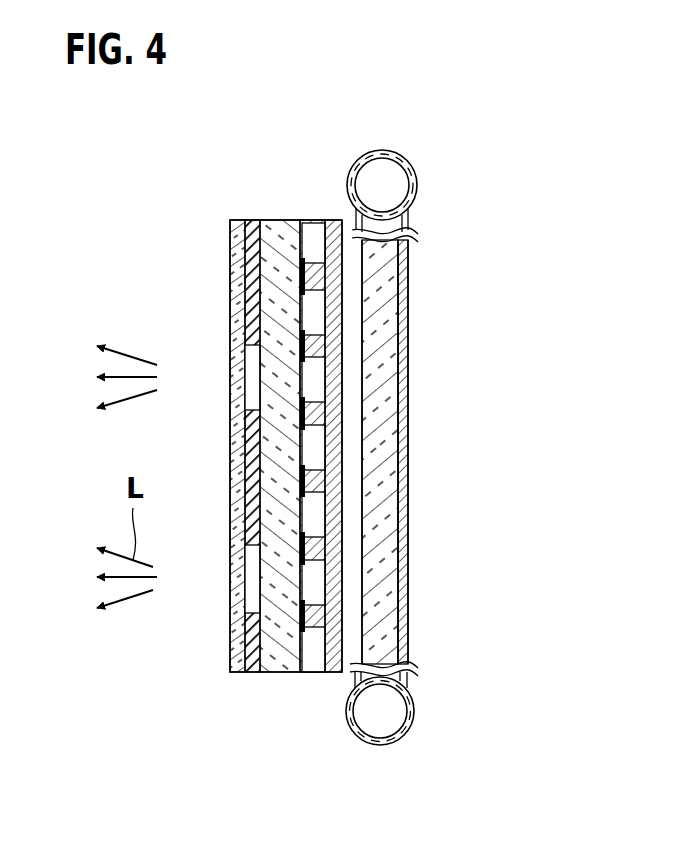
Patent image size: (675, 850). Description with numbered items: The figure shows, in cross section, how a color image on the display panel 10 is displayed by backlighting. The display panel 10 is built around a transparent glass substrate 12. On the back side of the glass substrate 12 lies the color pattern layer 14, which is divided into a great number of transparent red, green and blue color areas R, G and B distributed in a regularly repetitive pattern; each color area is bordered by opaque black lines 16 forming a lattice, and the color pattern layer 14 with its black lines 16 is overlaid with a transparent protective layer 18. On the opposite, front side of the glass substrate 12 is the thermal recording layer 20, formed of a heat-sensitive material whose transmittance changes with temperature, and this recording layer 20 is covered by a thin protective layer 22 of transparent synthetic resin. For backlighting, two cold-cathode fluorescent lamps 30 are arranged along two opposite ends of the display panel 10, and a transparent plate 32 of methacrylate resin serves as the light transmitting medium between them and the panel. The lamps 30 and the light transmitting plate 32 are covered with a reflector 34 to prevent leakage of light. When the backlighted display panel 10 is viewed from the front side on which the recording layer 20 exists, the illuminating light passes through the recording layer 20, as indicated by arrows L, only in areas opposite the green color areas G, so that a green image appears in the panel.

The display panel 10 is at (321, 395).
The transparent glass substrate 12 is at (270, 228).
The color pattern layer 14 is at (328, 508).
The black lines 16 is at (328, 548).
The transparent protective layer 18 is at (308, 604).
The thermal recording layer 20 is at (245, 222).
The protective layer 22 is at (237, 255).
The fluorescent lamps 30 is at (395, 185).
The transparent plate 32 is at (395, 330).
The reflector 34 is at (404, 440).